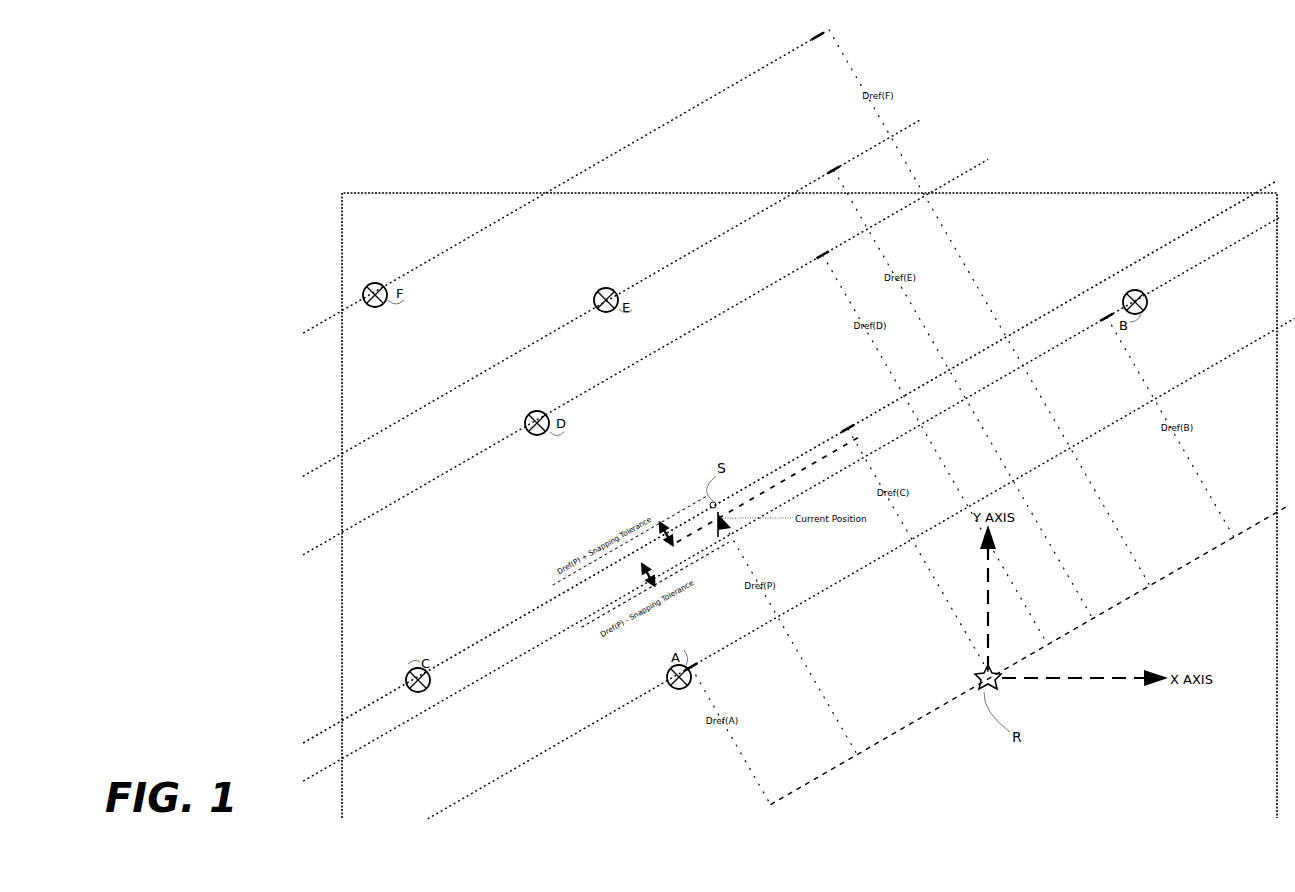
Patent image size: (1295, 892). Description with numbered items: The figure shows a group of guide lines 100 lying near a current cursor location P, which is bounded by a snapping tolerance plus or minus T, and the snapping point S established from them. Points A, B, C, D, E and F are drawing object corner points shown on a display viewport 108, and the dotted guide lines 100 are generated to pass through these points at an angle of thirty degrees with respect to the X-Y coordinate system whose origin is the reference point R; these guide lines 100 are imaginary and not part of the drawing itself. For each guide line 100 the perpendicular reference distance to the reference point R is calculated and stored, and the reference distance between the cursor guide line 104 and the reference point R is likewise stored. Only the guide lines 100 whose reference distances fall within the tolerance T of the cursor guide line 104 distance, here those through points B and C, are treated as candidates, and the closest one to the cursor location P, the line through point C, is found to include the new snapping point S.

The guide lines 100 is at (420, 264).
The cursor guide line 104 is at (787, 476).
The display viewport 108 is at (1100, 193).